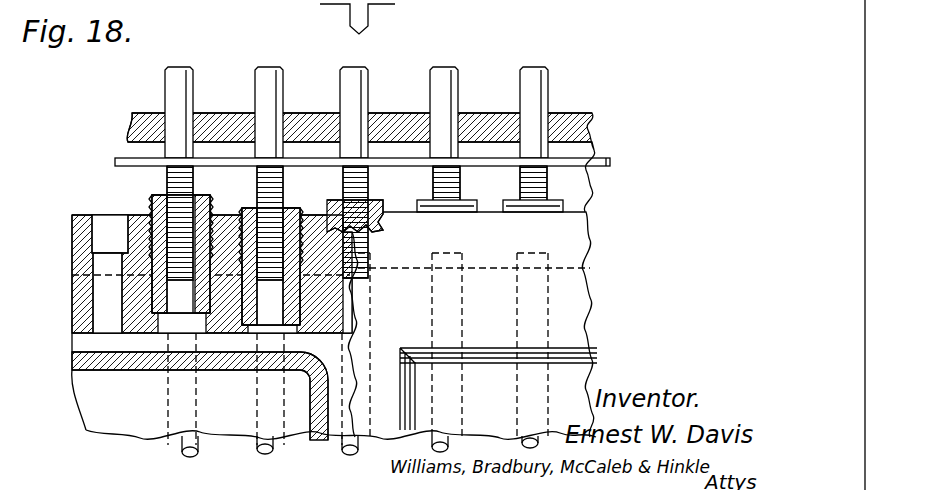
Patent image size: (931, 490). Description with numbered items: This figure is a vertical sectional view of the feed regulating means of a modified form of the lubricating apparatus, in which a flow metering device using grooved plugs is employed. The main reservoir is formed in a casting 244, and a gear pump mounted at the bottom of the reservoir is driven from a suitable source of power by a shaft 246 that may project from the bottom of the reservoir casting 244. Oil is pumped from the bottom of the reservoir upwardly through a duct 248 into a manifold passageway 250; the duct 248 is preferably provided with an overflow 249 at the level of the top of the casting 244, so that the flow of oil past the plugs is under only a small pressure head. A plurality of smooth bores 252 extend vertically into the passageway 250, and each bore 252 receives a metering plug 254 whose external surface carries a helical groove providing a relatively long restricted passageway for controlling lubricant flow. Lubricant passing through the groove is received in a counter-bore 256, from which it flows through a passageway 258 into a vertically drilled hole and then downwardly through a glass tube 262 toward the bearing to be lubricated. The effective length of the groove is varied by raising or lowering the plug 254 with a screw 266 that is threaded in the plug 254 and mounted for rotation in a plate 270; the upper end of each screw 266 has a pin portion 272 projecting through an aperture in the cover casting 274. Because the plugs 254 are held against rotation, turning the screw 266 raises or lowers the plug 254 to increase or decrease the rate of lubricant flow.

The casting 244 is at (582, 243).
The shaft 246 is at (372, 12).
The duct 248 is at (341, 448).
The overflow 249 is at (100, 241).
The manifold passageway 250 is at (143, 343).
The smooth bore 252 is at (160, 320).
The metering plug 254 is at (247, 213).
The counter-bore 256 is at (153, 205).
The passageway 258 is at (357, 242).
The glass tube 262 is at (256, 447).
The screw 266 is at (418, 203).
The plate 270 is at (610, 158).
The pin portion 272 is at (255, 77).
The cover casting 274 is at (312, 113).